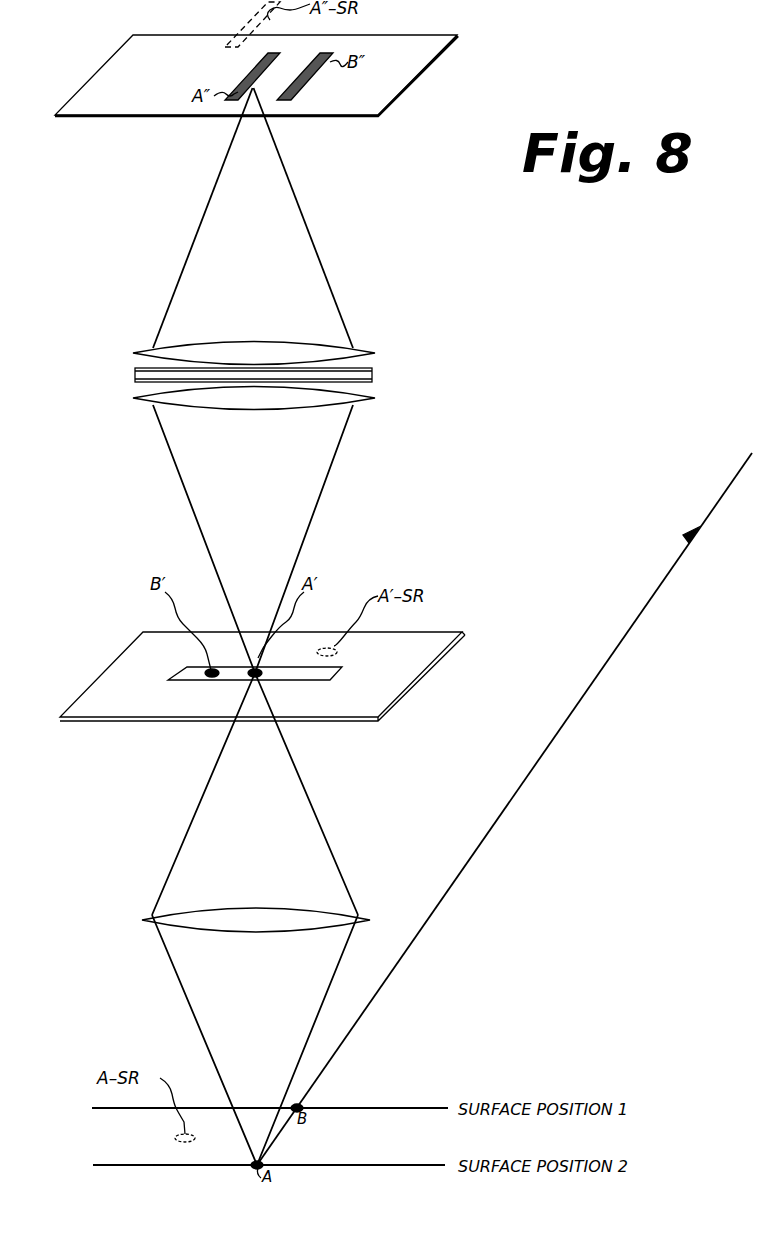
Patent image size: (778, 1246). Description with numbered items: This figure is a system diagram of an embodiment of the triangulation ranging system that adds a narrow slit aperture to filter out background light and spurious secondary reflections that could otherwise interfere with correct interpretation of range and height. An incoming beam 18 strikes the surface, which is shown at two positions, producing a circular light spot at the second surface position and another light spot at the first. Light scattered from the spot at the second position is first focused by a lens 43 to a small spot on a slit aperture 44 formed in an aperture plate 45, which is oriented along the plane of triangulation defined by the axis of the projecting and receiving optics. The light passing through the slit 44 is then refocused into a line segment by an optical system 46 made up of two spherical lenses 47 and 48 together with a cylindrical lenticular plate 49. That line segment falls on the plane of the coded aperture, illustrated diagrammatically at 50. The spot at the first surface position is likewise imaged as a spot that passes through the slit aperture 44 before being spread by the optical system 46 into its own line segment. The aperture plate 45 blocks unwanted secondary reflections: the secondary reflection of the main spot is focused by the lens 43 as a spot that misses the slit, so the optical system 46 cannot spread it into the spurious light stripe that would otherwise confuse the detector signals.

The light beam 18 is at (602, 671).
The lens 43 is at (190, 914).
The slit aperture 44 is at (186, 666).
The aperture plate 45 is at (446, 640).
The optical system 46 is at (305, 377).
The spherical lens 47 is at (170, 347).
The spherical lens 48 is at (172, 404).
The cylindrical lenticular plate 49 is at (136, 375).
The plane of coded aperture 50 is at (95, 80).